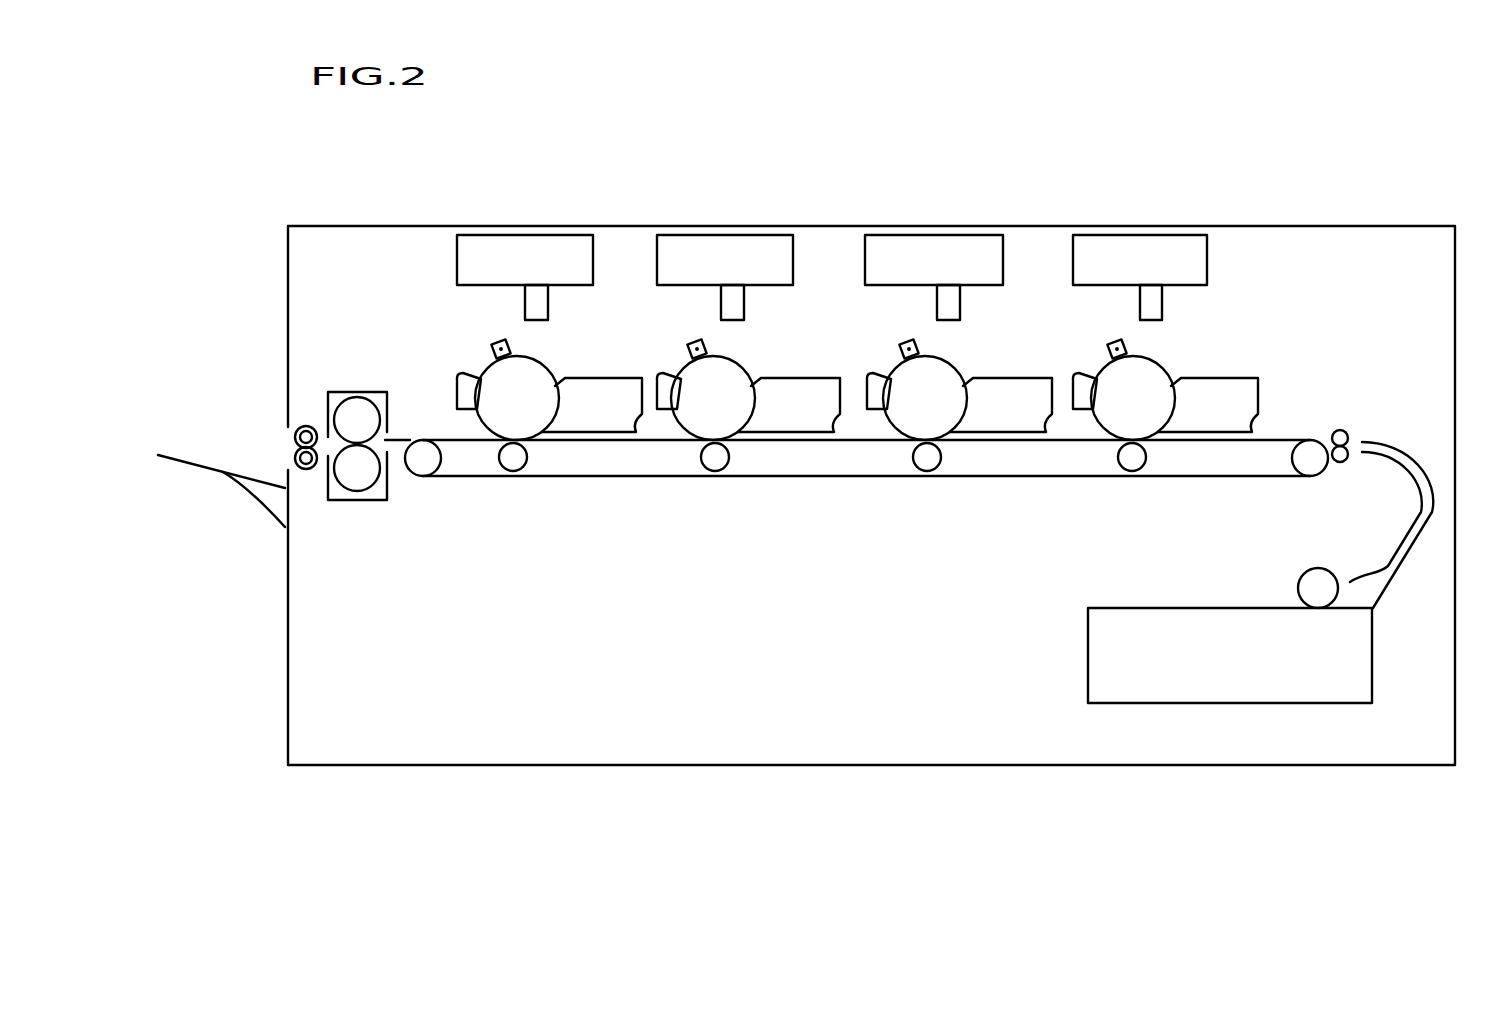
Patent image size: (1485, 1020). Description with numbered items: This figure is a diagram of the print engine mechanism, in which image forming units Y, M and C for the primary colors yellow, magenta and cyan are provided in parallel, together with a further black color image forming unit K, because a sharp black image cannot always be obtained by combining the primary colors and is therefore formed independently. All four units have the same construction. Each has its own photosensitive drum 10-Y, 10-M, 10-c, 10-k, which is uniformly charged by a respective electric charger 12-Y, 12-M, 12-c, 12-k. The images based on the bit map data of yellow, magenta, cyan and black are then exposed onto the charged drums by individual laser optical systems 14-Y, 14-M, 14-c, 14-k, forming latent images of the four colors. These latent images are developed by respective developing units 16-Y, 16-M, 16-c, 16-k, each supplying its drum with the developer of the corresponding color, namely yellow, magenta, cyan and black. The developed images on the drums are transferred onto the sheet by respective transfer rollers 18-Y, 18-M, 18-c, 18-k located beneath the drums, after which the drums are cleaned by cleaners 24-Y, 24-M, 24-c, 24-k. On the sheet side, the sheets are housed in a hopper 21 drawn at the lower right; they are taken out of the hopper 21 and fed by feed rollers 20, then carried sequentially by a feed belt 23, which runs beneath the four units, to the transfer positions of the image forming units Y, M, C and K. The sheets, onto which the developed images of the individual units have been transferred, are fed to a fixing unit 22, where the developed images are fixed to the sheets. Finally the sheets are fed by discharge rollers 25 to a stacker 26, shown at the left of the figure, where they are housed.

The photosensitive drum 10-k is at (545, 413).
The photosensitive drum 10-c is at (741, 413).
The photosensitive drum 10-M is at (953, 413).
The photosensitive drum 10-Y is at (1161, 413).
The electric charger 12-k is at (493, 340).
The electric charger 12-c is at (695, 342).
The electric charger 12-M is at (910, 340).
The electric charger 12-Y is at (1112, 342).
The laser optical system 14-k is at (593, 248).
The laser optical system 14-c is at (793, 250).
The laser optical system 14-M is at (1000, 250).
The laser optical system 14-Y is at (1207, 250).
The developing unit 16-k is at (594, 370).
The developing unit 16-c is at (789, 370).
The developing unit 16-M is at (1004, 370).
The developing unit 16-Y is at (1252, 363).
The transfer roller 18-k is at (511, 461).
The transfer roller 18-c is at (713, 461).
The transfer roller 18-M is at (925, 462).
The transfer roller 18-Y is at (1130, 462).
The cleaner 24-k is at (455, 388).
The cleaner 24-c is at (657, 393).
The cleaner 24-M is at (867, 400).
The cleaner 24-Y is at (1073, 398).
The black color image forming unit K is at (508, 361).
The image forming unit C is at (699, 360).
The image forming unit M is at (932, 351).
The image forming unit Y is at (1168, 352).
The feed rollers 20 is at (1340, 430).
The hopper 21 is at (1092, 650).
The fixing unit 22 is at (358, 393).
The feed belt 23 is at (641, 492).
The discharge rollers 25 is at (304, 426).
The stacker 26 is at (188, 456).